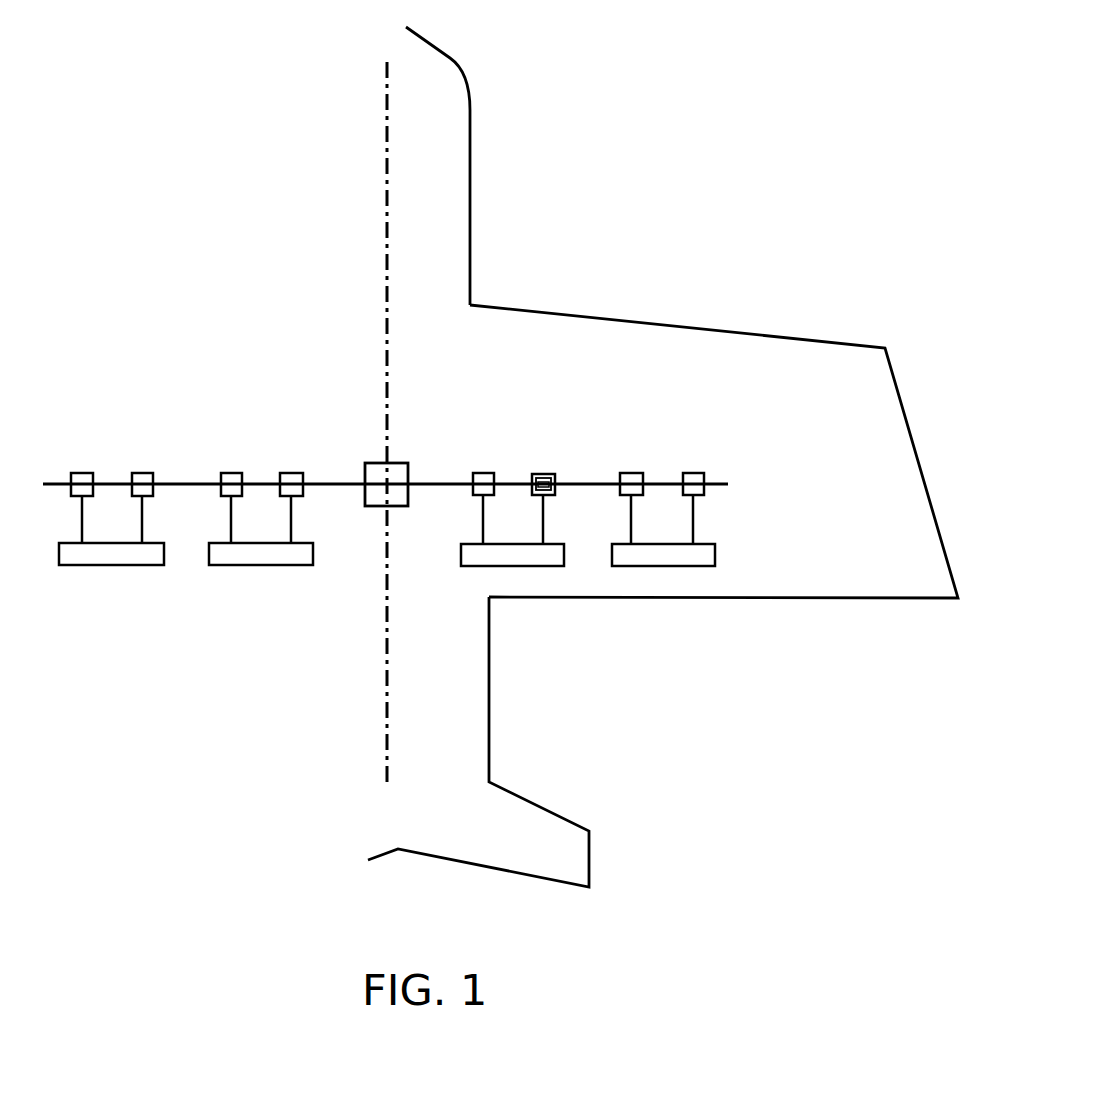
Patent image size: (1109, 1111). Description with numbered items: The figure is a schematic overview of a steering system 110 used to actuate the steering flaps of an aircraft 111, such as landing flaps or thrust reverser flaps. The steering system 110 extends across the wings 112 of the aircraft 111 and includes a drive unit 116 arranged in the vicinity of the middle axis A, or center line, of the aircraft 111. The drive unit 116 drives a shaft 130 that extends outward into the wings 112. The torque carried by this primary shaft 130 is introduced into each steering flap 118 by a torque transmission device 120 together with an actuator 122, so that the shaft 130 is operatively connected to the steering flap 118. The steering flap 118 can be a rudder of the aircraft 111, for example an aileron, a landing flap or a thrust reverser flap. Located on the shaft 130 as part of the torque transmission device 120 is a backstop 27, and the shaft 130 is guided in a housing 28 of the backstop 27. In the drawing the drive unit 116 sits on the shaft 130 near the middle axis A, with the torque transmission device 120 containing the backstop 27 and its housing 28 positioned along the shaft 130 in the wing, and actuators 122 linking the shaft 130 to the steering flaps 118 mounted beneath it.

The middle axis A is at (370, 218).
The steering system 110 is at (273, 378).
The aircraft 111 is at (702, 158).
The wings 112 is at (711, 613).
The drive unit 116 is at (397, 506).
The steering flap 118 is at (715, 557).
The torque transmission device 120 is at (540, 473).
The actuator 122 is at (710, 510).
The shaft 130 is at (443, 482).
The backstop 27 is at (550, 476).
The housing 28 is at (552, 483).